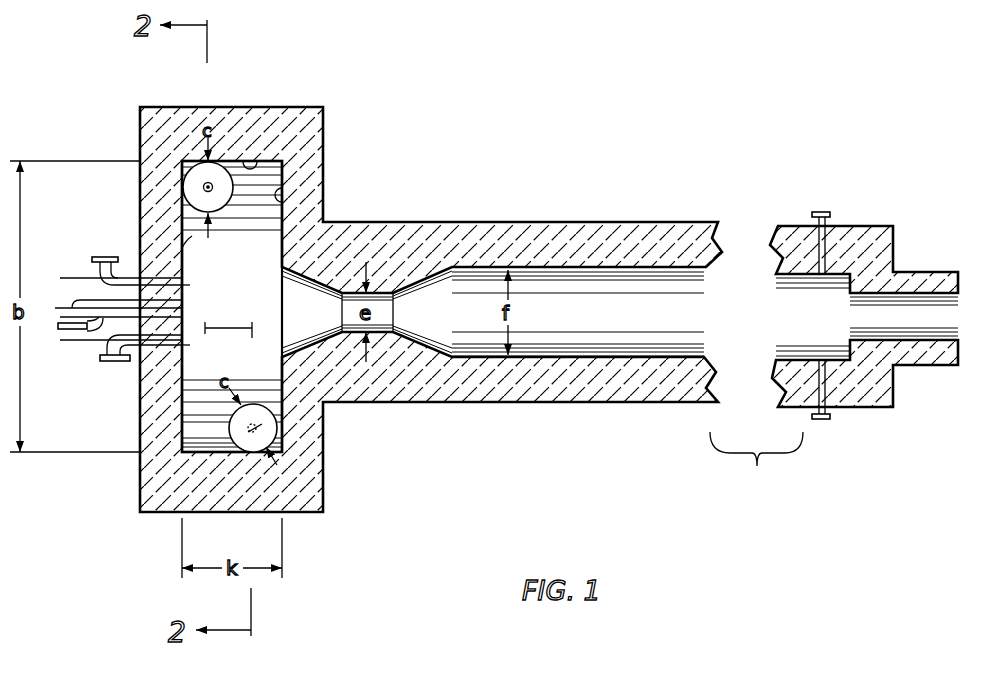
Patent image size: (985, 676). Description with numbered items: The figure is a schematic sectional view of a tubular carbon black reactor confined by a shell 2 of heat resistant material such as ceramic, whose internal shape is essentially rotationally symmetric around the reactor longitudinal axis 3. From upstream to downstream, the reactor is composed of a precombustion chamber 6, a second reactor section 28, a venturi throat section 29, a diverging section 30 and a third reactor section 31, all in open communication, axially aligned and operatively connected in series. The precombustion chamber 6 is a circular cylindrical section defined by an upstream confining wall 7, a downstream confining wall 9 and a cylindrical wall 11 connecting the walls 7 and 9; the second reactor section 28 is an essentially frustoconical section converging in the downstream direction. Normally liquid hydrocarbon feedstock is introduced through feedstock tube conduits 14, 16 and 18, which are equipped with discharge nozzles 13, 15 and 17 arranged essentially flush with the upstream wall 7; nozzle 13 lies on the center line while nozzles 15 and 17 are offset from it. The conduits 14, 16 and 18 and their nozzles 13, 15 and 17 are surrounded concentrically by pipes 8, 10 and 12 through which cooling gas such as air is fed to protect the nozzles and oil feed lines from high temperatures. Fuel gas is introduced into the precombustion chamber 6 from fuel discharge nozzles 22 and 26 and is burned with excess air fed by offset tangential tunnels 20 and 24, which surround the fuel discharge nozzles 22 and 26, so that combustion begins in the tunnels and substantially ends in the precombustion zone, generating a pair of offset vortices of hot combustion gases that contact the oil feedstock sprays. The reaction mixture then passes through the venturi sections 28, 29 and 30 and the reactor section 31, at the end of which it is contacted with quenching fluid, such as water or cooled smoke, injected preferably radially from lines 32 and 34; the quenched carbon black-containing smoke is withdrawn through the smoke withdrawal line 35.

The shell 2 is at (500, 205).
The reactor longitudinal axis 3 is at (940, 305).
The precombustion chamber 6 is at (252, 321).
The upstream confining wall 7 is at (187, 247).
The pipe 8 is at (88, 333).
The downstream confining wall 9 is at (283, 197).
The pipe 10 is at (114, 257).
The cylindrical wall 11 is at (252, 161).
The pipe 12 is at (110, 360).
The discharge nozzle 13 is at (182, 306).
The feedstock tube conduit 14 is at (74, 300).
The discharge nozzle 15 is at (182, 281).
The feedstock tube conduit 16 is at (70, 278).
The discharge nozzle 17 is at (184, 343).
The feedstock tube conduit 18 is at (62, 341).
The offset tangential tunnel 20 is at (222, 162).
The fuel discharge nozzle 22 is at (214, 188).
The offset tangential tunnel 24 is at (258, 404).
The fuel discharge nozzle 26 is at (258, 427).
The second reactor section 28 is at (318, 324).
The venturi throat section 29 is at (388, 292).
The diverging section 30 is at (422, 312).
The third reactor section 31 is at (580, 324).
The quench line 32 is at (830, 222).
The quench line 34 is at (812, 418).
The smoke withdrawal line 35 is at (912, 300).